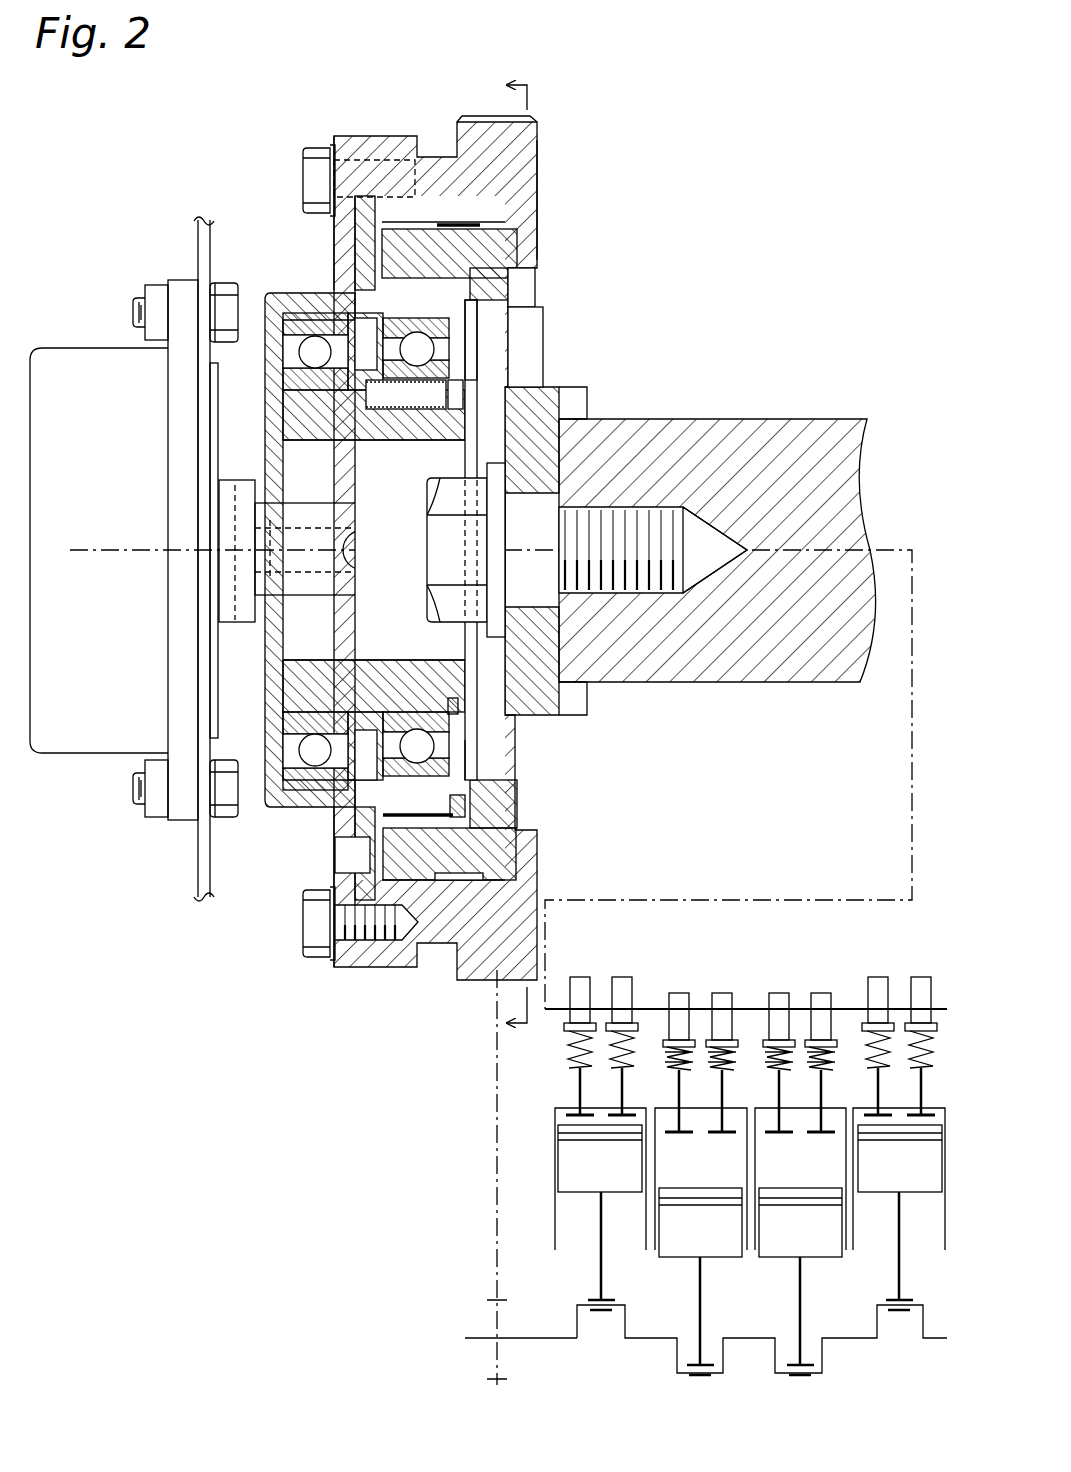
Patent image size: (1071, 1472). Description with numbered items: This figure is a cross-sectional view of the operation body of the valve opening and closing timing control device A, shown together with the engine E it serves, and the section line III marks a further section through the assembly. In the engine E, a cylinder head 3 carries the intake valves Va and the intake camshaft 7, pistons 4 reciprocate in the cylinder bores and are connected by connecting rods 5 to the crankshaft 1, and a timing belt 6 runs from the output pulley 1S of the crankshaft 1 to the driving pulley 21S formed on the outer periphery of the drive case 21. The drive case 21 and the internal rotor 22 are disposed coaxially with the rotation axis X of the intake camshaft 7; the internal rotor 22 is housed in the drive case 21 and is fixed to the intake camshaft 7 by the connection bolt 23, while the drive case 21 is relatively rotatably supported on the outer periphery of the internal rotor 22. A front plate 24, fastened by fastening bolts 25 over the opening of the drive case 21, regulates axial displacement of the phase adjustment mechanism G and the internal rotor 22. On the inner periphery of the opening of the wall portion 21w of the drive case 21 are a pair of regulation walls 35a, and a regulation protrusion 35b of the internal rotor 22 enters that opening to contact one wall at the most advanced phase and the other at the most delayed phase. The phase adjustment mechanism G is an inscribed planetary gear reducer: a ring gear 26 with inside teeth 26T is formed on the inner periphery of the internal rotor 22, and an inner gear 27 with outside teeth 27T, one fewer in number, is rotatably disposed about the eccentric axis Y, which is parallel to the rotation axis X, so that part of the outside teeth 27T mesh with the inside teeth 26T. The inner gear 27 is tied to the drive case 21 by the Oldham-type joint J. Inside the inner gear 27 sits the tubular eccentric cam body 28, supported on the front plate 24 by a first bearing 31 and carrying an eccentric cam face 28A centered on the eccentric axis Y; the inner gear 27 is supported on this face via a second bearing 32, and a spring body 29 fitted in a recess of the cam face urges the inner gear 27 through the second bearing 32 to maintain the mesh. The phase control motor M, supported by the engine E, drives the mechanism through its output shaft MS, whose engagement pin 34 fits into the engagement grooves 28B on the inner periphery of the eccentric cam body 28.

The crankshaft 1 is at (524, 1336).
The output pulley 1S is at (502, 1339).
The cylinder head 3 is at (637, 1103).
The piston 4 is at (562, 1167).
The connecting rod 5 is at (600, 1278).
The timing belt 6 is at (497, 1130).
The intake camshaft 7 is at (776, 419).
The drive case 21 is at (540, 160).
The driving pulley 21S is at (497, 120).
The wall portion 21w is at (542, 172).
The internal rotor 22 is at (470, 232).
The connection bolt 23 is at (690, 575).
The front plate 24 is at (340, 137).
The fastening bolt 25 is at (300, 180).
The ring gear 26 is at (432, 282).
The inside teeth 26T is at (437, 823).
The inner gear 27 is at (452, 295).
The outside teeth 27T is at (457, 810).
The eccentric cam body 28 is at (276, 418).
The eccentric cam face 28A is at (412, 714).
The engagement groove 28B is at (320, 560).
The spring body 29 is at (417, 405).
The first bearing 31 is at (300, 353).
The second bearing 32 is at (442, 355).
The engagement pin 34 is at (350, 540).
The regulation wall 35a is at (530, 293).
The regulation protrusion 35b is at (537, 335).
The valve opening and closing timing control device A is at (262, 135).
The engine E is at (812, 172).
The phase adjustment mechanism G is at (462, 770).
The joint J is at (363, 815).
The phase control motor M is at (82, 348).
The output shaft MS is at (368, 508).
The intake valve Va is at (612, 1115).
The rotation axis X is at (481, 774).
The eccentric axis Y is at (245, 552).
The section line III is at (507, 560).